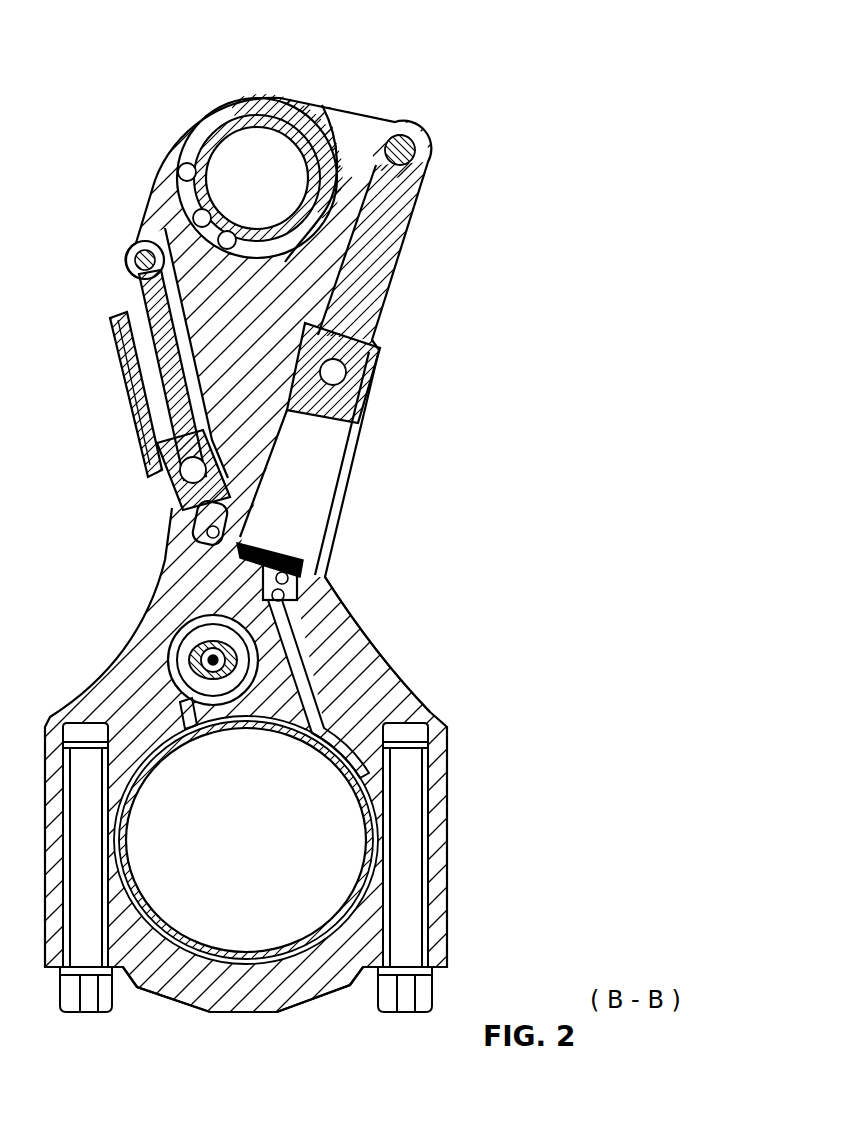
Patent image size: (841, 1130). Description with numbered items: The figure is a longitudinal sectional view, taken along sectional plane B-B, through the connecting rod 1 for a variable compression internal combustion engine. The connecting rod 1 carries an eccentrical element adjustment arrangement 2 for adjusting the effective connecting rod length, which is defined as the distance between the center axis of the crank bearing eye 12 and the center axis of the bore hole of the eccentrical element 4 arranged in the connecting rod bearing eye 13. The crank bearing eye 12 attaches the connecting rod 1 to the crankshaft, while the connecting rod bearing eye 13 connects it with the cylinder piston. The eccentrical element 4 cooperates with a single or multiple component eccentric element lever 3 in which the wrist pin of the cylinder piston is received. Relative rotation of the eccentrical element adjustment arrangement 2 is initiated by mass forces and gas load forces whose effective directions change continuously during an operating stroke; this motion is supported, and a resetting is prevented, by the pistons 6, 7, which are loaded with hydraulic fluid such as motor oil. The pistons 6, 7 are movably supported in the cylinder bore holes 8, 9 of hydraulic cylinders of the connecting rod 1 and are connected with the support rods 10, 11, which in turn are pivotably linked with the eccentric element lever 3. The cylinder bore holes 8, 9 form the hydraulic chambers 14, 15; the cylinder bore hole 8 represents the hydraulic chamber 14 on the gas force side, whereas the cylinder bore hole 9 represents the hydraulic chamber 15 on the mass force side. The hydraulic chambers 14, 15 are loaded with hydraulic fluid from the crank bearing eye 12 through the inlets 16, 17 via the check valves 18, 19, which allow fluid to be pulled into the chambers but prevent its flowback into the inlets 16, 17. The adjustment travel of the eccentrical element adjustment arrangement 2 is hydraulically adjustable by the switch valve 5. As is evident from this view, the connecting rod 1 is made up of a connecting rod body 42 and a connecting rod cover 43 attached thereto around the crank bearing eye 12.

The connecting rod 1 is at (530, 150).
The eccentrical element adjustment arrangement 2 is at (447, 220).
The eccentric element lever 3 is at (334, 128).
The eccentrical element 4 is at (242, 112).
The switch valve 5 is at (170, 630).
The piston 6 is at (347, 407).
The piston 7 is at (160, 493).
The cylinder bore hole 8 is at (325, 476).
The cylinder bore hole 9 is at (132, 344).
The support rod 10 is at (378, 274).
The support rod 11 is at (166, 371).
The crank bearing eye 12 is at (254, 846).
The connecting rod bearing eye 13 is at (160, 158).
The hydraulic chamber 14 is at (300, 502).
The hydraulic chamber 15 is at (152, 405).
The inlet 16 is at (187, 707).
The inlet 17 is at (283, 653).
The check valve 18 is at (297, 590).
The check valve 19 is at (195, 523).
The connecting rod body 42 is at (353, 677).
The connecting rod cover 43 is at (447, 858).